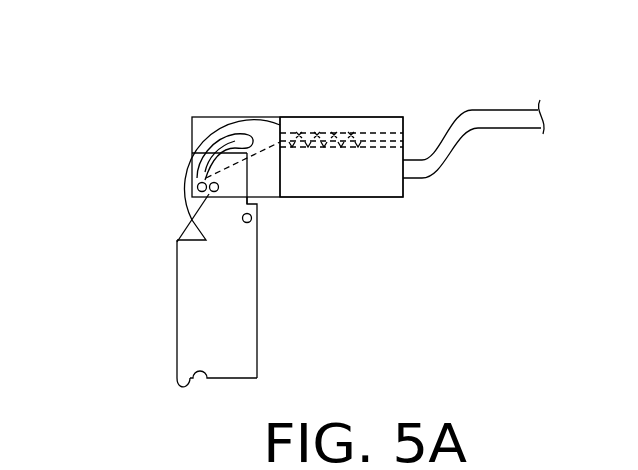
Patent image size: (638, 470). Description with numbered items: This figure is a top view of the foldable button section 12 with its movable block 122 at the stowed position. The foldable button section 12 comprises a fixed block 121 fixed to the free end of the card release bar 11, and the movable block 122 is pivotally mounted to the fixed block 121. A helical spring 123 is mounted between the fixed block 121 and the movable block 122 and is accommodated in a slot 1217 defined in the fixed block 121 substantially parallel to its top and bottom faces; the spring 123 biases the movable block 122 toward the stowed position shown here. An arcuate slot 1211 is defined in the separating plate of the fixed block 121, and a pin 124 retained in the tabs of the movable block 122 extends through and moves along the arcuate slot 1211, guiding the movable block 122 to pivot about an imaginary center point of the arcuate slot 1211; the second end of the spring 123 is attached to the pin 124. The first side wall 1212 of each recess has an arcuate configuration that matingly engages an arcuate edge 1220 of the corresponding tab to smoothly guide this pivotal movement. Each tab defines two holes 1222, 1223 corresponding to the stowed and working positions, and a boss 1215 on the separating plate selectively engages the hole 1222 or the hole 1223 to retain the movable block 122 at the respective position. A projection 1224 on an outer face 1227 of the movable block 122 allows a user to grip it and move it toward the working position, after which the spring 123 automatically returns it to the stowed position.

The card release bar 11 is at (510, 118).
The foldable button section 12 is at (322, 118).
The fixed block 121 is at (375, 187).
The movable block 122 is at (205, 302).
The helical spring 123 is at (348, 134).
The slot 1217 is at (377, 136).
The arcuate slot 1211 is at (235, 138).
The first side wall 1212 is at (257, 127).
The boss 1215 is at (200, 160).
The pin 124 is at (198, 182).
The arcuate edge 1220 is at (185, 196).
The hole 1222 is at (177, 242).
The hole 1223 is at (251, 223).
The projection 1224 is at (185, 378).
The outer face 1227 is at (232, 380).